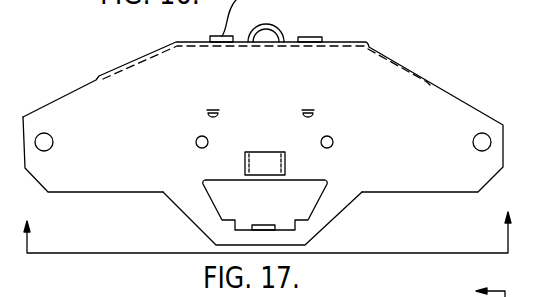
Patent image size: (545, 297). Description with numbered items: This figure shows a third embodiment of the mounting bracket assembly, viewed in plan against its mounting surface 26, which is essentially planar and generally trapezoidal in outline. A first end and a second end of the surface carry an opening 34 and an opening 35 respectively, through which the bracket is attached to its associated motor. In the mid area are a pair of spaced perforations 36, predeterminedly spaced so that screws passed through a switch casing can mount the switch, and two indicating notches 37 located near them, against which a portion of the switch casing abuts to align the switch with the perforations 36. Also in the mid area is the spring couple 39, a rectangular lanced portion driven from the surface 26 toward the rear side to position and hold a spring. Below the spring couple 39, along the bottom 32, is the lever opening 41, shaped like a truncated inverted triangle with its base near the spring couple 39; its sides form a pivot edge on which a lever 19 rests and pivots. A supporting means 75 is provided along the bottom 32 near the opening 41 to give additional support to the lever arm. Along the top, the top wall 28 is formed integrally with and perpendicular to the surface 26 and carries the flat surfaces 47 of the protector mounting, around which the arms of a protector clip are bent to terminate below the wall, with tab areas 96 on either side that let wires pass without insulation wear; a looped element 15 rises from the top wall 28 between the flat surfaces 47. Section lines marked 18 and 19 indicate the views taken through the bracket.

The mounting surface 26 is at (398, 80).
The tab area 96 is at (138, 58).
The top wall 28 is at (181, 42).
The arch loop 15 is at (277, 28).
The flat surfaces 47 is at (317, 37).
The opening 34 is at (53, 141).
The opening 35 is at (473, 139).
The indicating notches 37 is at (301, 113).
The perforations 36 is at (320, 141).
The spring couple 39 is at (245, 167).
The lever opening 41 is at (287, 198).
The supporting means 75 is at (255, 225).
The bottom 32 is at (293, 238).
The section line 18- 18 is at (267, 219).
The lever 19 is at (475, 287).